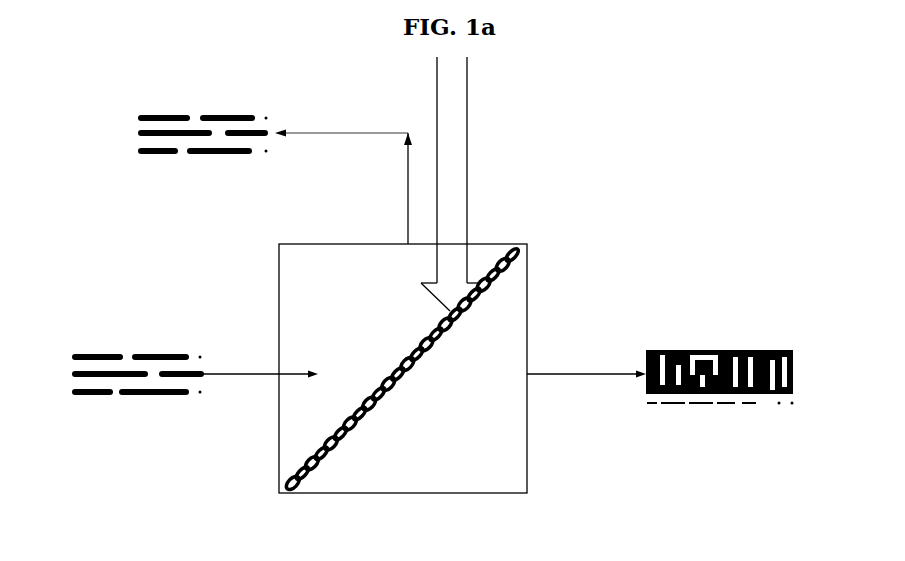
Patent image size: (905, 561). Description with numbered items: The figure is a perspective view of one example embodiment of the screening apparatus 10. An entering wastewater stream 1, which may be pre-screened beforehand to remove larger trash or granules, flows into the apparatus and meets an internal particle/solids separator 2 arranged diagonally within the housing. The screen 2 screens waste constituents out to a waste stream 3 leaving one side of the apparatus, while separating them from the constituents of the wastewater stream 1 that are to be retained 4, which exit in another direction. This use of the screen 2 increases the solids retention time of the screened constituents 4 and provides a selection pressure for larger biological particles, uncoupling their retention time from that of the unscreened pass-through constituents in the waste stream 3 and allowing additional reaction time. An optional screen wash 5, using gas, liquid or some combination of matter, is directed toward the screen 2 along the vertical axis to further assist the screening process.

The wastewater stream 1 is at (72, 356).
The particle/solids separator 2 is at (283, 482).
The waste stream 3 is at (645, 345).
The retained constituents 4 is at (138, 114).
The screen wash 5 is at (468, 238).
The screening apparatus 10 is at (638, 112).